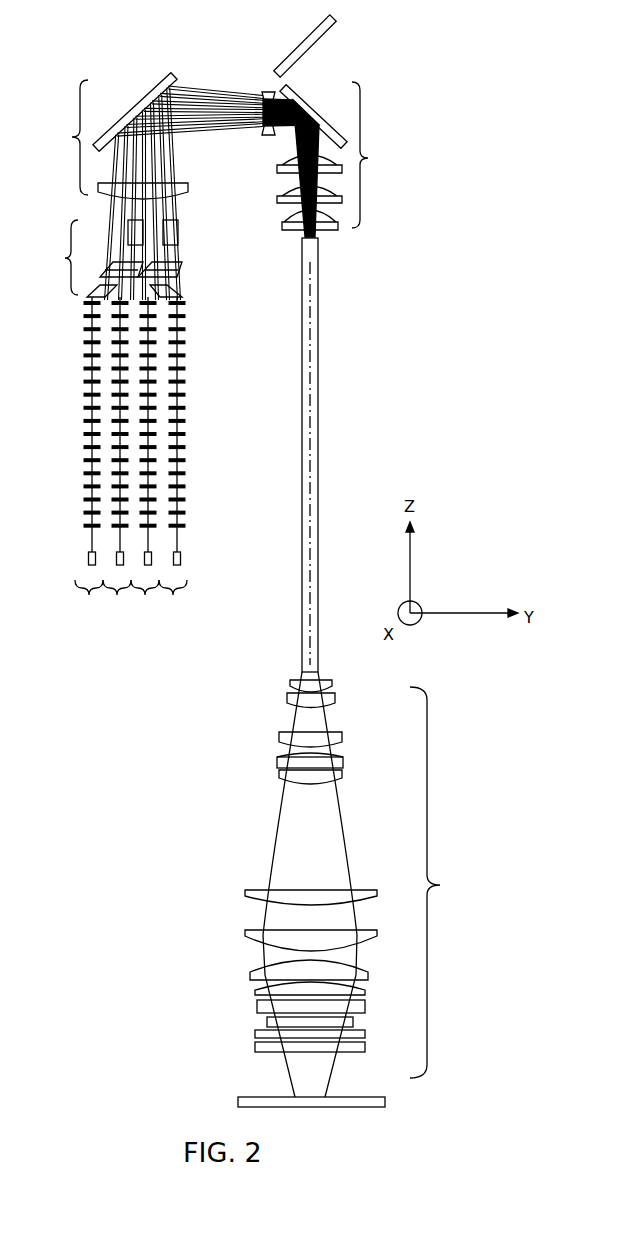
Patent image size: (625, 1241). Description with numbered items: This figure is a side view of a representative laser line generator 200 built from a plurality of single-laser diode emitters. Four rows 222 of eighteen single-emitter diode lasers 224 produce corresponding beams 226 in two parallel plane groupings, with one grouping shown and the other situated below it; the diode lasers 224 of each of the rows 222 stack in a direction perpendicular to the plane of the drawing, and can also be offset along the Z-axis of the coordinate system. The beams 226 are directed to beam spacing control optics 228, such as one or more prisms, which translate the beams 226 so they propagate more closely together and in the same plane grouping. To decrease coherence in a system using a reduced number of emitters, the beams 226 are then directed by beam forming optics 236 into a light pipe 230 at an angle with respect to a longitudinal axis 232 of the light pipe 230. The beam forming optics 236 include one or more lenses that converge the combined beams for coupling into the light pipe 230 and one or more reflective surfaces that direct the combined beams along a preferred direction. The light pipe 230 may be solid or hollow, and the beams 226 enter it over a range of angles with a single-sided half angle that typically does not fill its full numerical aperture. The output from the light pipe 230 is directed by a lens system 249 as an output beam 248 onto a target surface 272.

The optical system 200 is at (141, 926).
The rows 222 is at (131, 600).
The single-emitter diode lasers 224 is at (177, 556).
The beams 226 is at (177, 519).
The beam spacing control optics 228 is at (100, 258).
The light pipe 230 is at (302, 370).
The longitudinal axis 232 is at (310, 405).
The beam forming optics 236 is at (216, 157).
The output beam 248 is at (310, 1079).
The lens system 249 is at (365, 879).
The target surface 272 is at (258, 1097).